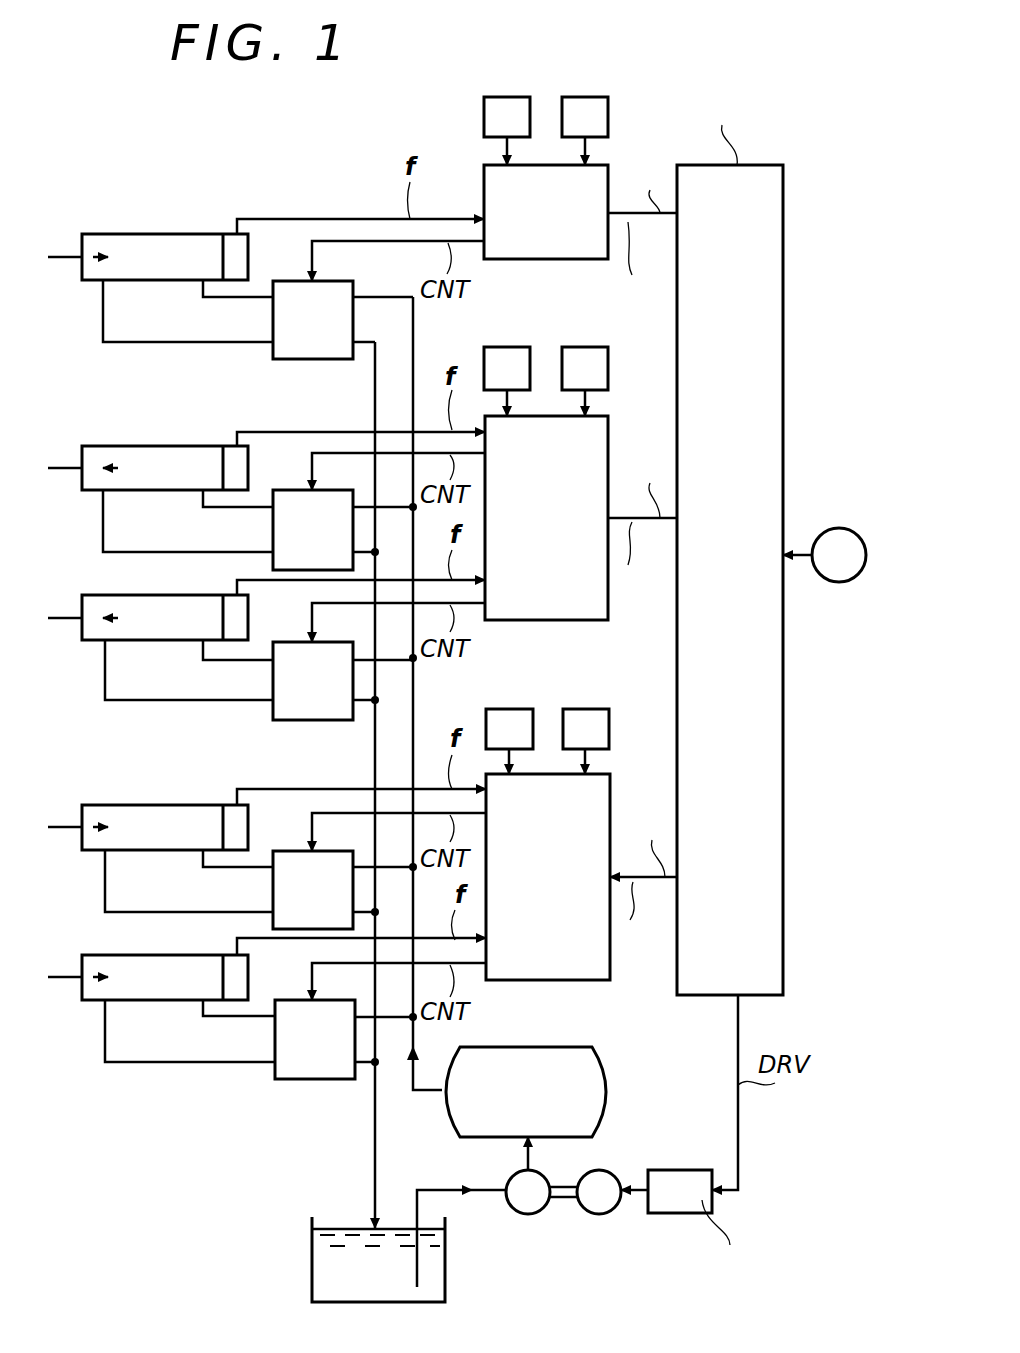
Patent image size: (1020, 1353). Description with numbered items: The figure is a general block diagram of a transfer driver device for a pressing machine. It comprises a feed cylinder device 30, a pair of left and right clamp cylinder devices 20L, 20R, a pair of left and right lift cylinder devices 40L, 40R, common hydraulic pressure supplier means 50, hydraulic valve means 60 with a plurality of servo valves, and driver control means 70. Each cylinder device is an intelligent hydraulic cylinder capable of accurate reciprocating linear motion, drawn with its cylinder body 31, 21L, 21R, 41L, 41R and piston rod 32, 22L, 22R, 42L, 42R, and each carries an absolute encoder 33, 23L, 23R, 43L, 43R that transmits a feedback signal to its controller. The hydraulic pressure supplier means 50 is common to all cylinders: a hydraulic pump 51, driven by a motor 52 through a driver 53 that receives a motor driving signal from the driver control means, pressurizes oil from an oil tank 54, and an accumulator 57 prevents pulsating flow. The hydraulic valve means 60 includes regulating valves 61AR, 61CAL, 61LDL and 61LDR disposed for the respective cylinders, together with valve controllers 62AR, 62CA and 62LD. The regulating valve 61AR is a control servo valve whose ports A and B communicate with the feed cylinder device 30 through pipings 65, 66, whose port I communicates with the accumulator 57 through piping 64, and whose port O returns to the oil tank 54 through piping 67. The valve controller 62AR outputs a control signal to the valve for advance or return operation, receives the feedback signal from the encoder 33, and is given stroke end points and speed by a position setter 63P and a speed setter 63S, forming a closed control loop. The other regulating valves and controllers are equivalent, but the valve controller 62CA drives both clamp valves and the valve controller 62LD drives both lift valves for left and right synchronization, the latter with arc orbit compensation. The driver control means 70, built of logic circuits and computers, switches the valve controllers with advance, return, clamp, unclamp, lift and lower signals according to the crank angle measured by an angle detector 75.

The feed cylinder device 30 is at (148, 187).
The hydraulic cylinder 31 is at (155, 245).
The inlet/piston rod 32 is at (60, 257).
The absolute encoder 33 is at (230, 257).
The hydraulic valve means 60 is at (355, 180).
The regulating valve 61AR is at (325, 287).
The valve controller 62AR is at (484, 185).
The position setter 63P is at (497, 108).
The speed setter 63S is at (585, 108).
The piping 64 is at (415, 705).
The piping 65 is at (246, 297).
The piping 66 is at (125, 340).
The piping 67 is at (375, 1135).
The driver control means 70 is at (775, 265).
The angle detector 75 is at (835, 528).
The left clamp cylinder device 20L is at (152, 413).
The left camber cylinder 21L is at (150, 458).
The left camber piston rod 22L is at (58, 468).
The absolute encoder 23L is at (230, 468).
The regulating valve 61CAL is at (298, 497).
The valve controller 62CA is at (593, 600).
The right clamp cylinder device 20R is at (179, 609).
The right camber cylinder 21R is at (190, 597).
The right camber piston rod 22R is at (62, 618).
The absolute encoder 23R is at (240, 620).
The left lift cylinder device 40L is at (146, 777).
The left load cylinder 41L is at (177, 812).
The left load piston rod 42L is at (60, 827).
The absolute encoder 43L is at (230, 827).
The regulating valve 61LDL is at (292, 857).
The valve controller 62LD is at (558, 980).
The right lift cylinder device 40R is at (179, 974).
The right load cylinder 41R is at (163, 1000).
The right load piston rod 42R is at (60, 977).
The absolute encoder 43R is at (240, 978).
The regulating valve 61LDR is at (300, 1072).
The accumulator 57 is at (605, 1095).
The oil tank 54 is at (322, 1263).
The hydraulic pressure supplier means 50 is at (636, 1228).
The hydraulic pump 51 is at (530, 1214).
The motor 52 is at (600, 1214).
The driver 53 is at (694, 1222).